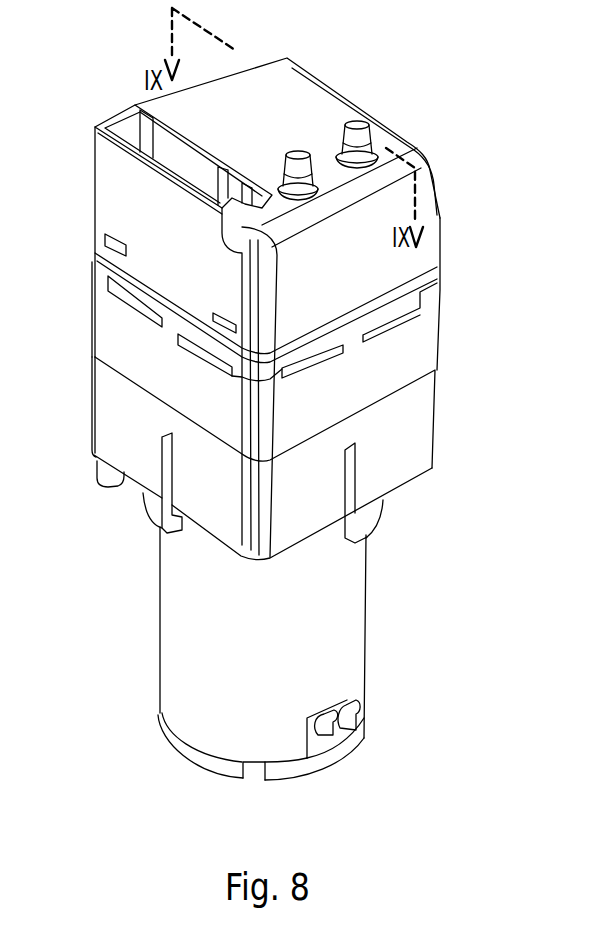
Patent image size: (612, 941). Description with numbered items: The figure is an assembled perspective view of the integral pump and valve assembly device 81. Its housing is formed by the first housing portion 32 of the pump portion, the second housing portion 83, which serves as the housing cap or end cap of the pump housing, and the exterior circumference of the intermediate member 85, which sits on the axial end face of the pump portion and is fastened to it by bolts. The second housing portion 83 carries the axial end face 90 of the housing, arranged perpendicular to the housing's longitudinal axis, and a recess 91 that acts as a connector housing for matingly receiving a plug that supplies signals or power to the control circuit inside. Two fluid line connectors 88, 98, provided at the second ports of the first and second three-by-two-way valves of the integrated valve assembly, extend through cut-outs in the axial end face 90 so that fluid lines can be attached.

The device 81 is at (498, 125).
The axial end face 90 is at (289, 62).
The recess 91 is at (95, 127).
The second housing portion 83 is at (96, 217).
The intermediate member 85 is at (95, 263).
The first housing portion 32 is at (91, 368).
The fluid line connector 88 is at (298, 150).
The fluid line connector 98 is at (365, 137).